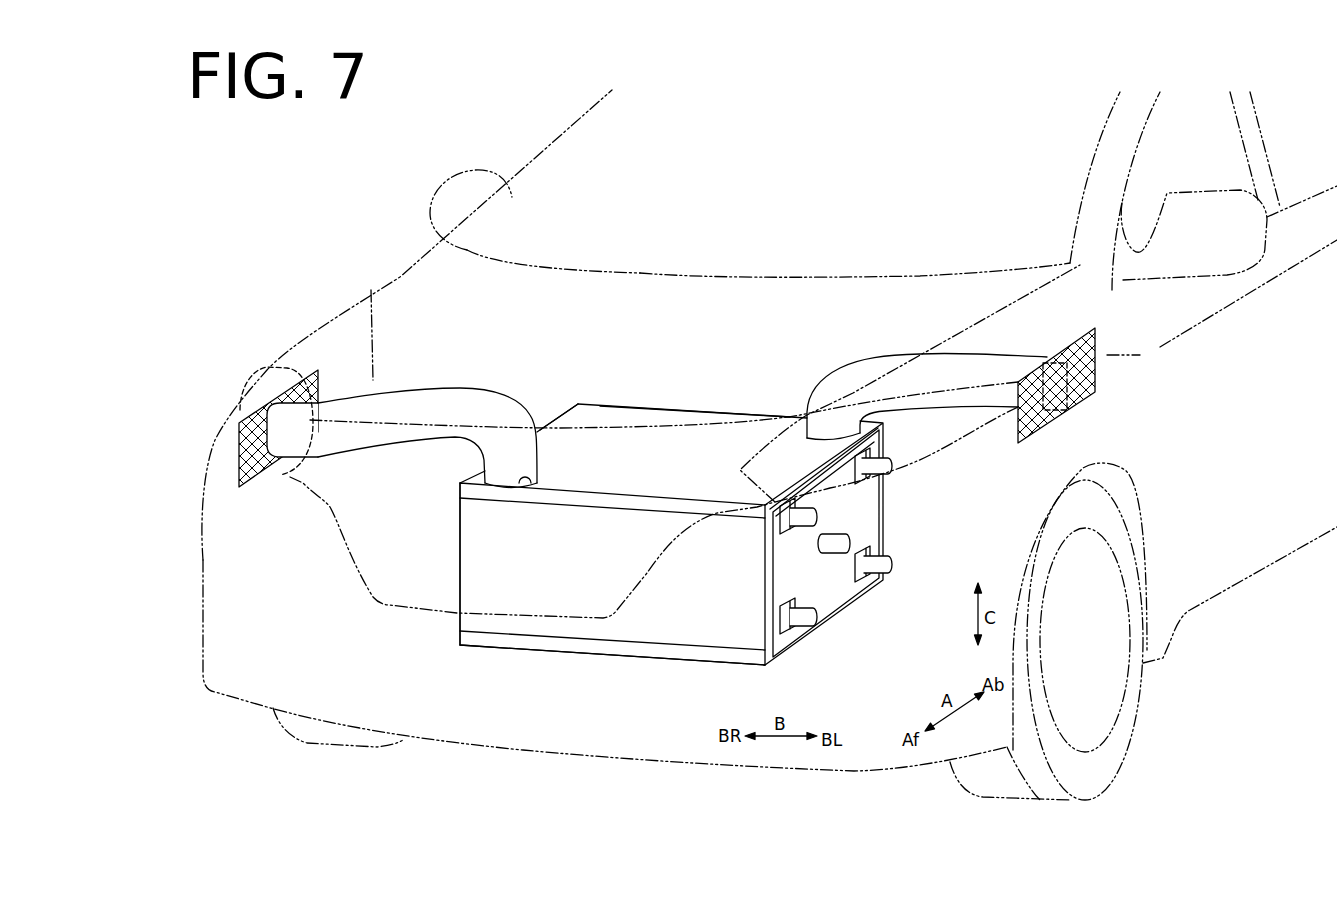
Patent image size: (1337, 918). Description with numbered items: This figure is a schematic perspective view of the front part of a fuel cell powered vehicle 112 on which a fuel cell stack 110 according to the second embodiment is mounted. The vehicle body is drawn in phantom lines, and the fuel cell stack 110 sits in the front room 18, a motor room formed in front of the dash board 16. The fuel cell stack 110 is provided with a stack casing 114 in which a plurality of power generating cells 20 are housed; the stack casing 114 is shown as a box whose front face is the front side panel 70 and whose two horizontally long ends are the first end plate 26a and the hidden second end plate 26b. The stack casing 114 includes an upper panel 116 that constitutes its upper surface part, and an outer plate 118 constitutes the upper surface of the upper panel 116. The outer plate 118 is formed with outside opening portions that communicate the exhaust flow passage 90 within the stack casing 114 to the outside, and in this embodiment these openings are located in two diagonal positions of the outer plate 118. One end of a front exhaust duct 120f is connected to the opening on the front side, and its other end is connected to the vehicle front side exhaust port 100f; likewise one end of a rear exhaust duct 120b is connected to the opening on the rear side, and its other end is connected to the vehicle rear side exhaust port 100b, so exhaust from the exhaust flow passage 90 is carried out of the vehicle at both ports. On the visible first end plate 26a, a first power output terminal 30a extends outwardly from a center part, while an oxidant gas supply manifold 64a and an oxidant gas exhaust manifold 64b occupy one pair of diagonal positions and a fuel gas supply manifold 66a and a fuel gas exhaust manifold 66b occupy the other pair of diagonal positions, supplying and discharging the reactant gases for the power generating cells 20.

The fuel cell powered vehicle 112 is at (345, 198).
The front room 18 is at (371, 290).
The dash board 16 is at (681, 278).
The vehicle front side exhaust port 100f is at (263, 420).
The vehicle rear side exhaust port 100b is at (1067, 405).
The front exhaust duct 120f is at (479, 396).
The rear exhaust duct 120b is at (880, 372).
The exhaust flow passage 90 is at (524, 474).
The outer plate 118 is at (627, 412).
The stack casing 114 is at (718, 396).
The upper panel 116 is at (676, 410).
The second end plate 26b is at (458, 566).
The first end plate 26a is at (838, 620).
The oxidant gas supply manifold 64a is at (892, 468).
The fuel gas supply manifold 66a is at (795, 511).
The first power output terminal 30a is at (821, 544).
The fuel gas exhaust manifold 66b is at (893, 571).
The oxidant gas exhaust manifold 64b is at (806, 634).
The front side panel 70 is at (534, 629).
The power generating cells 20 is at (617, 632).
The fuel cell stack 110 is at (638, 668).